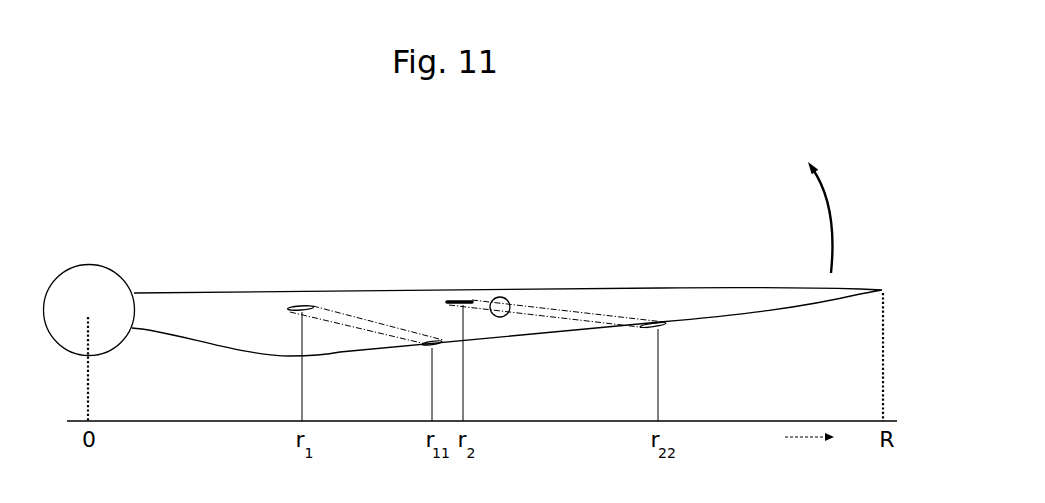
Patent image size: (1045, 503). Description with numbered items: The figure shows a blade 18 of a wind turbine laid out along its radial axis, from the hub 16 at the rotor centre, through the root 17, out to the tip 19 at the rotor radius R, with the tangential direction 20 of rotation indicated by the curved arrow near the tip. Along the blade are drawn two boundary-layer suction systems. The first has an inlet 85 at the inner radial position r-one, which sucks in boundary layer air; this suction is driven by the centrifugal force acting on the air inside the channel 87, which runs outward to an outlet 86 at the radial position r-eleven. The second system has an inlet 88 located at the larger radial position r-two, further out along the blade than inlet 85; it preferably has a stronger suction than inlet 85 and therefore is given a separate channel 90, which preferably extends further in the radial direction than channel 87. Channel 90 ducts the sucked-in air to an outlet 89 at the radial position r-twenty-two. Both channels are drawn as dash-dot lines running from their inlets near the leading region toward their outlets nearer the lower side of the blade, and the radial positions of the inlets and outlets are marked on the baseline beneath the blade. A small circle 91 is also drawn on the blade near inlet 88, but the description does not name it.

The hub 16 is at (100, 278).
The root 17 is at (185, 304).
The blade 18 is at (697, 301).
The tip 19 is at (846, 293).
The tangential direction 20 is at (818, 160).
The inlet 85 is at (302, 301).
The outlet 86 is at (424, 348).
The channel 87 is at (387, 326).
The inlet 88 is at (457, 298).
The outlet 89 is at (652, 329).
The channel 90 is at (605, 314).
The blade section marker 91 is at (497, 297).